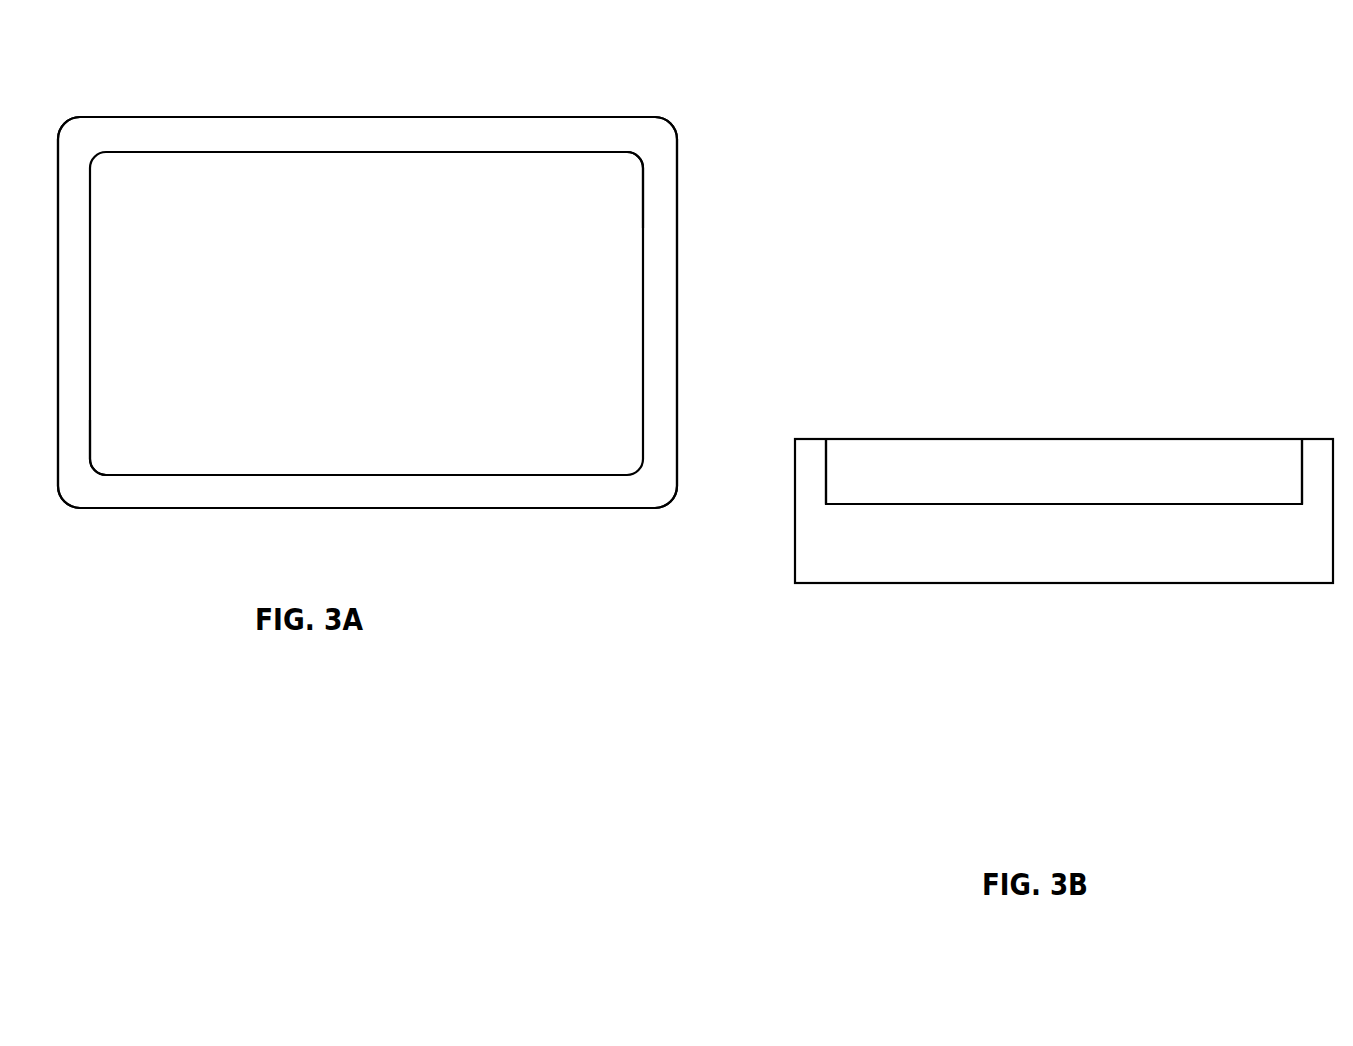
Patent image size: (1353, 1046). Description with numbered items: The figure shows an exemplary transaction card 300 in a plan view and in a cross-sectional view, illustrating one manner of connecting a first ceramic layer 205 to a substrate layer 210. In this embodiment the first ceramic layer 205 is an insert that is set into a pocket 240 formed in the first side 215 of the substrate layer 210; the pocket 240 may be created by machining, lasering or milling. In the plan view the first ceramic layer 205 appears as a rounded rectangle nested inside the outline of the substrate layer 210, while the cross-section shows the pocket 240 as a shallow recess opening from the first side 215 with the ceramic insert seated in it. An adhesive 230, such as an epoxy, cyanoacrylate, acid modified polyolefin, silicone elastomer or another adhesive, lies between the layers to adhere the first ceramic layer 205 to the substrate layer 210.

In FIG. 3A, the transaction card 300 is at (94, 84).
In FIG. 3A, the first ceramic layer 205 is at (299, 173).
In FIG. 3B, the first ceramic layer 205 is at (1059, 423).
In FIG. 3A, the substrate layer 210 is at (697, 315).
In FIG. 3B, the substrate layer 210 is at (1216, 608).
In FIG. 3A, the first side 215 is at (121, 493).
In FIG. 3B, the first side 215 is at (813, 484).
In FIG. 3B, the adhesive 230 is at (1161, 491).
In FIG. 3A, the pocket 240 is at (648, 216).
In FIG. 3B, the pocket 240 is at (1254, 468).